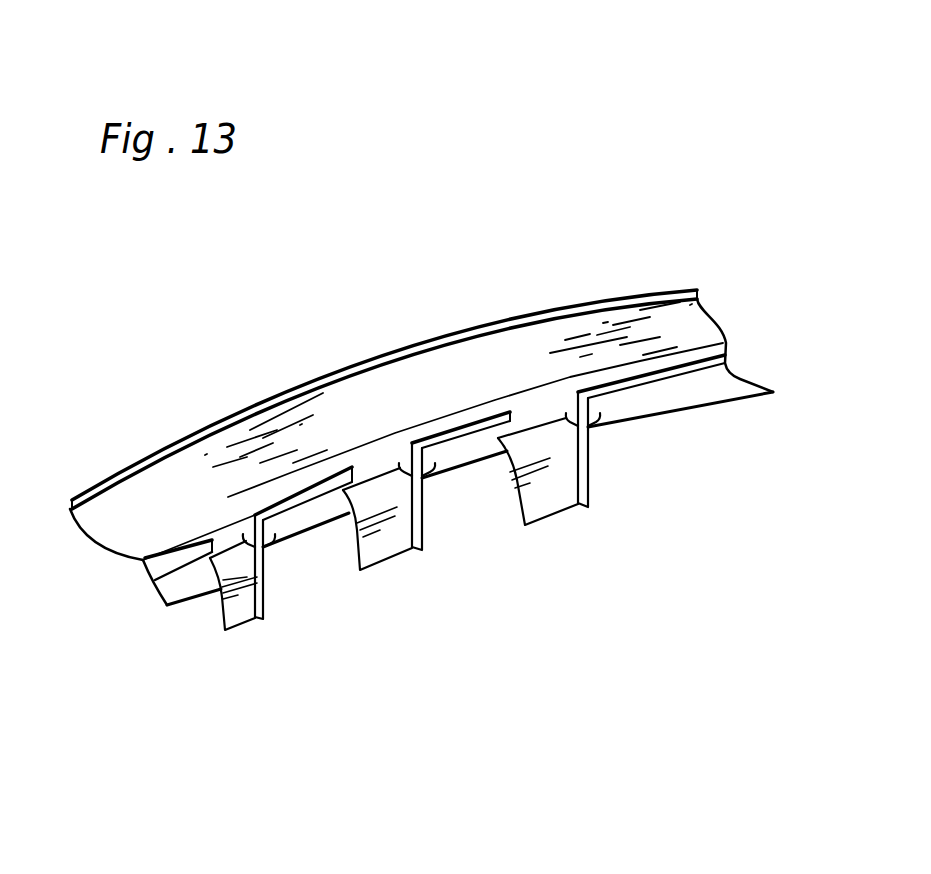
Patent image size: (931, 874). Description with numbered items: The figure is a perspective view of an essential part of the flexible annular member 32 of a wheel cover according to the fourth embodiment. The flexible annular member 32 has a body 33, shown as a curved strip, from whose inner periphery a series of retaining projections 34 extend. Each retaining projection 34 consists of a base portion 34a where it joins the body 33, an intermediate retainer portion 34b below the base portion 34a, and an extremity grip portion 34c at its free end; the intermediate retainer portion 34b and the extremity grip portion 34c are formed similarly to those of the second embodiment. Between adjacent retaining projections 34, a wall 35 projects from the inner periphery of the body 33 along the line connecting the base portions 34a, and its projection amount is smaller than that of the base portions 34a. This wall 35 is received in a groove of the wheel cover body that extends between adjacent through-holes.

The flexible annular member 32 is at (433, 485).
The body 33 is at (268, 448).
The retaining projection 34 is at (498, 563).
The base portion 34a is at (592, 423).
The intermediate retainer portion 34b is at (565, 473).
The extremity grip portion 34c is at (583, 495).
The wall 35 is at (470, 432).